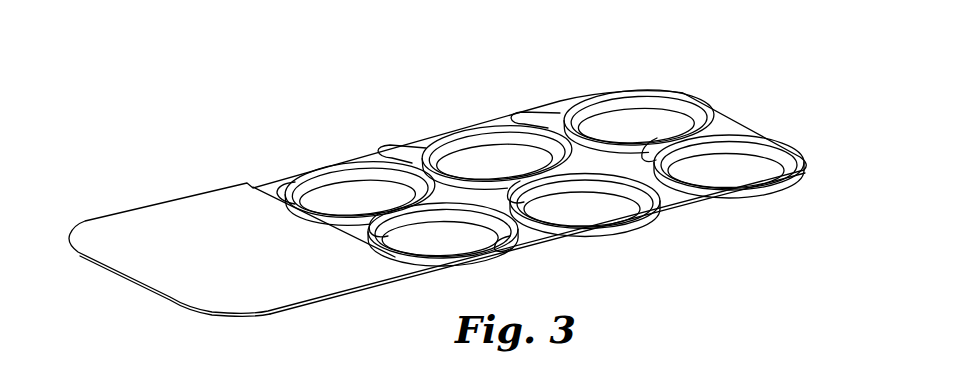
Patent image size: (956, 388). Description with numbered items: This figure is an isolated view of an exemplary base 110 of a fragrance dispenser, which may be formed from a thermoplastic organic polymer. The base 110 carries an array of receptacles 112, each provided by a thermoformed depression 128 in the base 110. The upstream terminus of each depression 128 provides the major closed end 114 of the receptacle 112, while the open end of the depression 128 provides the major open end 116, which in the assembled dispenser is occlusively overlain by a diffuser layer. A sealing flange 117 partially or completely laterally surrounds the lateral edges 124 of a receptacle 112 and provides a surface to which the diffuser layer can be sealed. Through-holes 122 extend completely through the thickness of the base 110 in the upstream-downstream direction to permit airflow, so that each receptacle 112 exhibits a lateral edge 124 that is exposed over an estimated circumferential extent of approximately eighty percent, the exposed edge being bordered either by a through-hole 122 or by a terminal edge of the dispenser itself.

The base 110 is at (439, 158).
The receptacle 112 is at (639, 93).
The major closed end 114 is at (607, 233).
The major open end 116 is at (662, 107).
The sealing flange 117 is at (289, 196).
The through-hole 122 is at (400, 157).
The lateral edge 124 is at (525, 224).
The thermoformed depression 128 is at (755, 199).